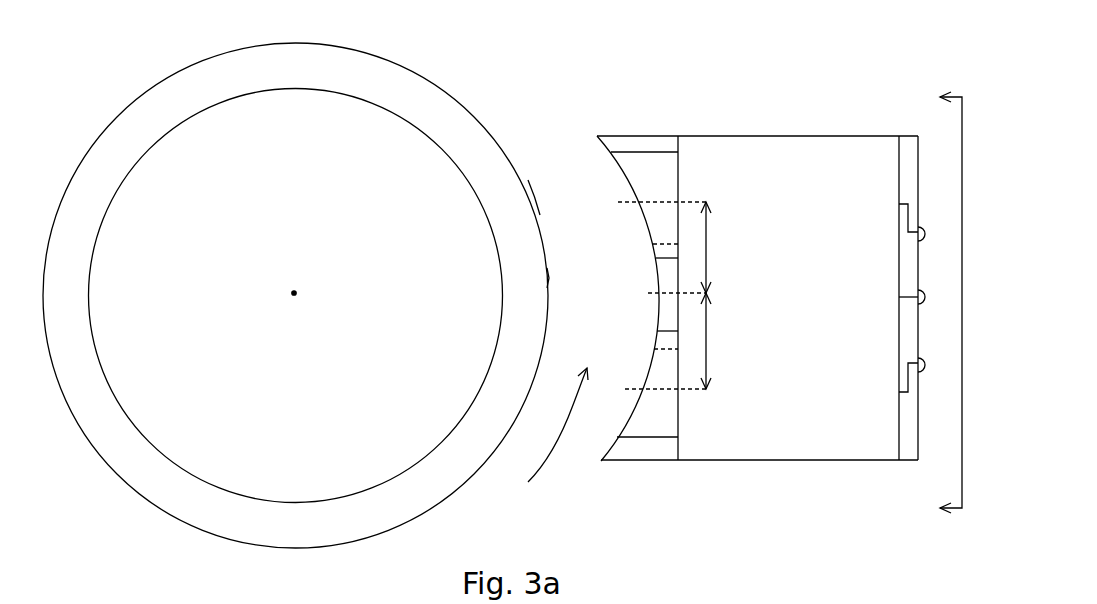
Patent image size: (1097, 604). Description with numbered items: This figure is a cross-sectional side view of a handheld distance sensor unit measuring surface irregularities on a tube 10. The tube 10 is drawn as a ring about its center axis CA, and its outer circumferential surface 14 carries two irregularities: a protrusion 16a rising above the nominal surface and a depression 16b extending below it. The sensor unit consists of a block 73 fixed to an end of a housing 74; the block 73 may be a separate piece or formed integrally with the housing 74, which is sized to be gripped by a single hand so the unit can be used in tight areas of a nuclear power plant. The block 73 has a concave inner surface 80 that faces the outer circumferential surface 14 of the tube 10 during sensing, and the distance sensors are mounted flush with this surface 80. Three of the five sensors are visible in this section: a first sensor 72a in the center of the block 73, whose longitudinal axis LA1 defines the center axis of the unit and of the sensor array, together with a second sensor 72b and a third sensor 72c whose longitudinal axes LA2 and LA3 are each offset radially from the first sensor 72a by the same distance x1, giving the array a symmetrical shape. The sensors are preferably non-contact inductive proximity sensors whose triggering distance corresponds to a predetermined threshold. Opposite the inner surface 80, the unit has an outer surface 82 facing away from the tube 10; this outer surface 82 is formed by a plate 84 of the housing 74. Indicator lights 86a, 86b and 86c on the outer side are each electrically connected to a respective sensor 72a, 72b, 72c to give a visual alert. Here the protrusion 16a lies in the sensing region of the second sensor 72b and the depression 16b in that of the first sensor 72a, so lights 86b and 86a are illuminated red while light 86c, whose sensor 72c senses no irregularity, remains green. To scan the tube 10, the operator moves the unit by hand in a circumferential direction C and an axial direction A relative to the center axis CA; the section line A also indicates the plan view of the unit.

The tube 10 is at (157, 67).
The outer circumferential surface 14 is at (440, 83).
The protrusion 16a is at (532, 182).
The depression 16b is at (558, 277).
The center axis CA is at (292, 292).
The concave inner surface 80 is at (623, 280).
The first sensor 72a is at (656, 270).
The second sensor 72b is at (644, 165).
The third sensor 72c is at (647, 420).
The block 73 is at (634, 456).
The housing 74 is at (793, 458).
The outer surface 82 is at (921, 442).
The plate 84 is at (910, 175).
The light 86a is at (927, 301).
The light 86b is at (927, 238).
The light 86c is at (928, 363).
The longitudinal axis LA1 is at (648, 295).
The longitudinal axis LA2 is at (628, 203).
The longitudinal axis LA3 is at (645, 389).
The distance x1 is at (707, 250).
The circumferential direction C is at (570, 418).
The axial direction A is at (951, 303).